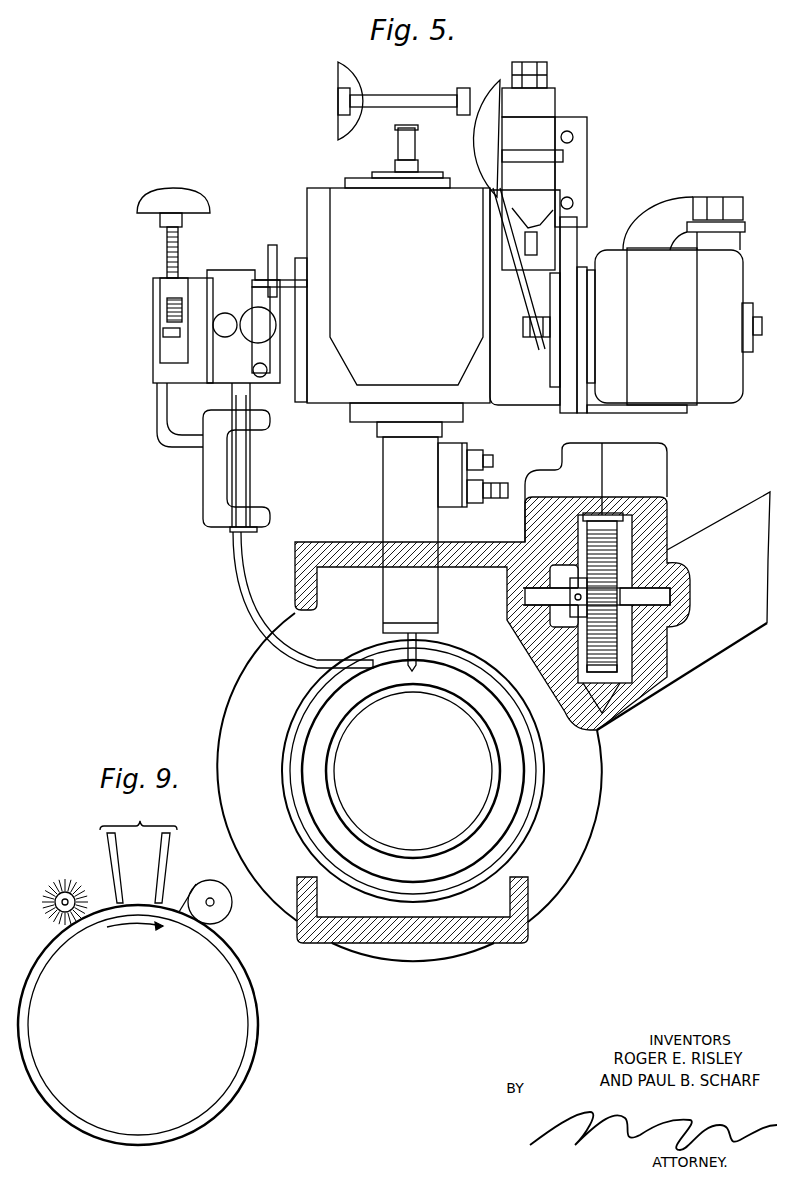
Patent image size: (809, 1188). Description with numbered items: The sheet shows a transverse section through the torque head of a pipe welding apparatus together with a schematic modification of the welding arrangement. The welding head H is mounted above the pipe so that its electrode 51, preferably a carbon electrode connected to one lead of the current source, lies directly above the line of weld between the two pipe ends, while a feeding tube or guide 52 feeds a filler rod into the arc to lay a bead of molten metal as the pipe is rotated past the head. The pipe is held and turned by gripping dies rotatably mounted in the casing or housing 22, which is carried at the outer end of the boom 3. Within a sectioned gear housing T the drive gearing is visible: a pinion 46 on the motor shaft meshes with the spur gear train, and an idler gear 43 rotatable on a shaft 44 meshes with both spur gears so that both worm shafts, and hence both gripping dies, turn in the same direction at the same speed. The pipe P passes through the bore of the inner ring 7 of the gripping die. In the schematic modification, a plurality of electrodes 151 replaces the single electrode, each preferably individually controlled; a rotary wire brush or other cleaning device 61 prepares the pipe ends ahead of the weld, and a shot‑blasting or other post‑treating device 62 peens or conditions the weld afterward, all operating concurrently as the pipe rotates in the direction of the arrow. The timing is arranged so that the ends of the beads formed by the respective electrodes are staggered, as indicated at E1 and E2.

In FIG. 5, the welding head H is at (357, 368).
In FIG. 9, the welding head H is at (138, 853).
In FIG. 5, the casing or housing 22 is at (475, 545).
In FIG. 5, the electrode 51 is at (414, 648).
In FIG. 5, the feeding tube or guide 52 is at (303, 650).
In FIG. 5, the ring bore P is at (442, 698).
In FIG. 5, the inner ring 7 is at (490, 813).
In FIG. 5, the gear housing T is at (653, 455).
In FIG. 5, the pinion 46 is at (625, 518).
In FIG. 5, the shaft 44 is at (660, 594).
In FIG. 5, the boom 3 is at (712, 643).
In FIG. 5, the idler gear 43 is at (620, 676).
In FIG. 9, the plurality of electrodes 151 is at (168, 851).
In FIG. 9, the rotary wire brush abrasive wheel or cleaning device 61 is at (54, 910).
In FIG. 9, the shot-blasting device or post-treating device 62 is at (223, 913).
In FIG. 9, the bead end E1 is at (123, 1138).
In FIG. 9, the bead end E2 is at (153, 1142).